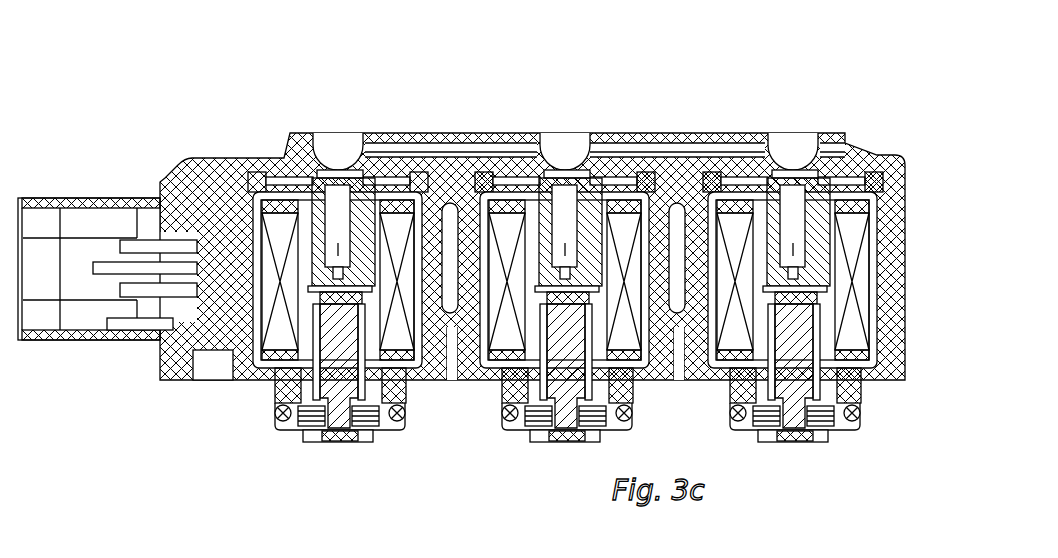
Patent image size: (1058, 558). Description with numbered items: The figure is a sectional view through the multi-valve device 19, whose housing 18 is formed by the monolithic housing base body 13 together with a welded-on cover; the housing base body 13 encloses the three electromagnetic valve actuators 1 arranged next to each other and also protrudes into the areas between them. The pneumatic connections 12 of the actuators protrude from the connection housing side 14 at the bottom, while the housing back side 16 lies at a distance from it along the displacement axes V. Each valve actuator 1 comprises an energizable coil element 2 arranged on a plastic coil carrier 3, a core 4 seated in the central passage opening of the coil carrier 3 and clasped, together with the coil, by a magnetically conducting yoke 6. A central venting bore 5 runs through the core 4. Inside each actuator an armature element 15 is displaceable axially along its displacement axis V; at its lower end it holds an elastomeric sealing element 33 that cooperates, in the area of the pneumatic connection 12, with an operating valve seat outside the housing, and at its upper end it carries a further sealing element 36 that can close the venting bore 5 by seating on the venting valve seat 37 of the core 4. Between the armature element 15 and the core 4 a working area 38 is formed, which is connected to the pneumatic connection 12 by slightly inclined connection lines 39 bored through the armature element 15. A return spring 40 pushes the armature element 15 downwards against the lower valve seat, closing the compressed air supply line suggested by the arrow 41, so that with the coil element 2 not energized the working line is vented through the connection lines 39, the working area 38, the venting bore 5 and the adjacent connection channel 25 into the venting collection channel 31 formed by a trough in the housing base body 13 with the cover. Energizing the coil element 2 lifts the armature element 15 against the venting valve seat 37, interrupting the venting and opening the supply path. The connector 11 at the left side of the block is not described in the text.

The electromagnetic valve actuator 1 is at (145, 512).
The coil element 2 is at (248, 330).
The coil carrier 3 is at (228, 158).
The core 4 is at (318, 193).
The venting bore 5 is at (507, 392).
The yoke 6 is at (250, 277).
The plug connector 11 is at (45, 323).
The pneumatic connection 12 is at (294, 408).
The housing base body 13 is at (203, 178).
The connection housing side 14 is at (469, 383).
The armature element 15 is at (850, 423).
The housing back side 16 is at (322, 196).
The housing 18 is at (182, 380).
The multi-valve device 19 is at (262, 372).
The connection channel 25 is at (823, 178).
The venting collection channel 31 is at (425, 160).
The sealing element 33 is at (349, 441).
The further sealing element 36 is at (531, 392).
The venting valve seat 37 is at (416, 190).
The working area 38 is at (760, 136).
The connection line 39 is at (282, 405).
The return spring 40 is at (600, 422).
The arrow 41 is at (798, 460).
The displacement axis V is at (329, 492).